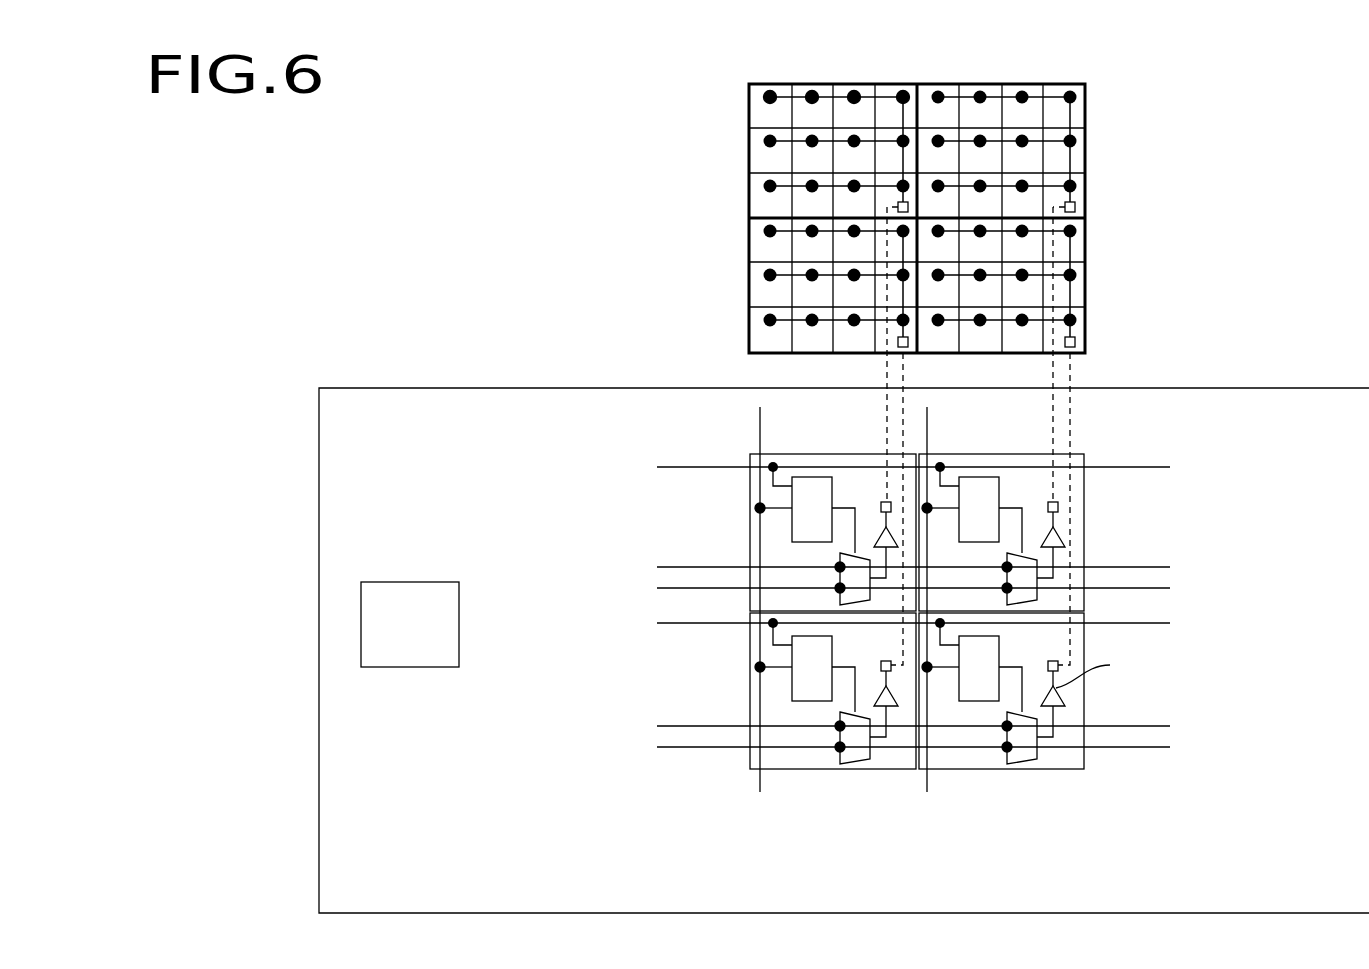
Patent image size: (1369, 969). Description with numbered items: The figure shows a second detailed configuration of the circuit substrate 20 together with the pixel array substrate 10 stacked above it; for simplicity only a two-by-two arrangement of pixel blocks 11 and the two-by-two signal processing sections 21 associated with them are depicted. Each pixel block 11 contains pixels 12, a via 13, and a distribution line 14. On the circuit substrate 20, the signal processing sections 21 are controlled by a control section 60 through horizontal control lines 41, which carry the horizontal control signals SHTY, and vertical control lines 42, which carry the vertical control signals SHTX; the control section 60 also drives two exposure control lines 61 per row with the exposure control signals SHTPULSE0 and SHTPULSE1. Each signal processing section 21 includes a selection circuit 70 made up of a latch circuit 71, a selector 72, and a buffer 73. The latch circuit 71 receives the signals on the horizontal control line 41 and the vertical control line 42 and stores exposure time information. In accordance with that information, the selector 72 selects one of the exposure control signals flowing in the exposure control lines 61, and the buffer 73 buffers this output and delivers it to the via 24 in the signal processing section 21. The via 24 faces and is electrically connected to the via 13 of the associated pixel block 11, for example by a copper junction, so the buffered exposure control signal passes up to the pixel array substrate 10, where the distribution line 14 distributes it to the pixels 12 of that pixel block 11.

The pixel array substrate 10 is at (918, 190).
The pixel block 11 is at (1087, 112).
The pixel 12 is at (768, 115).
The via 13 is at (1075, 207).
The distribution line 14 is at (1087, 250).
The circuit substrate 20 is at (528, 387).
The signal processing section 21 is at (757, 667).
The via 24 is at (1095, 507).
The horizontal control line 41 is at (703, 465).
The vertical control line 42 is at (760, 432).
The control section 60 is at (410, 582).
The exposure control line 61 is at (1150, 562).
The selection circuit 70 is at (1022, 762).
The latch circuit 71 is at (977, 701).
The selector 72 is at (1022, 760).
The buffer 73 is at (1062, 694).